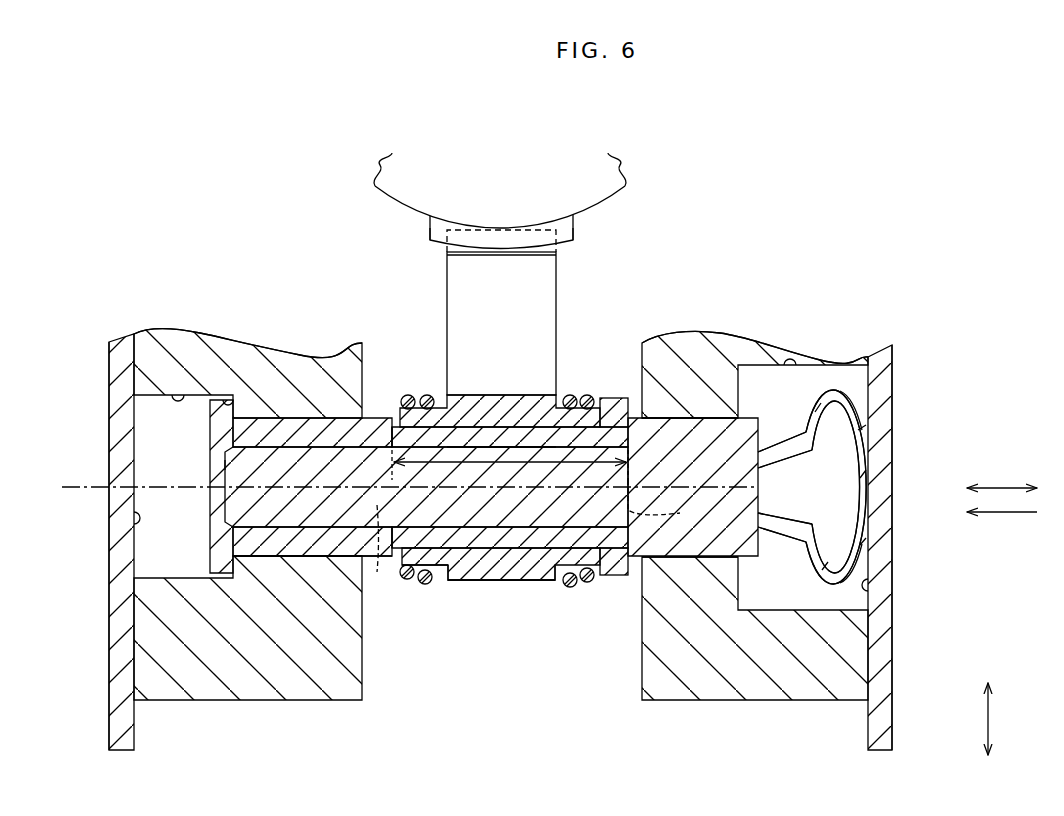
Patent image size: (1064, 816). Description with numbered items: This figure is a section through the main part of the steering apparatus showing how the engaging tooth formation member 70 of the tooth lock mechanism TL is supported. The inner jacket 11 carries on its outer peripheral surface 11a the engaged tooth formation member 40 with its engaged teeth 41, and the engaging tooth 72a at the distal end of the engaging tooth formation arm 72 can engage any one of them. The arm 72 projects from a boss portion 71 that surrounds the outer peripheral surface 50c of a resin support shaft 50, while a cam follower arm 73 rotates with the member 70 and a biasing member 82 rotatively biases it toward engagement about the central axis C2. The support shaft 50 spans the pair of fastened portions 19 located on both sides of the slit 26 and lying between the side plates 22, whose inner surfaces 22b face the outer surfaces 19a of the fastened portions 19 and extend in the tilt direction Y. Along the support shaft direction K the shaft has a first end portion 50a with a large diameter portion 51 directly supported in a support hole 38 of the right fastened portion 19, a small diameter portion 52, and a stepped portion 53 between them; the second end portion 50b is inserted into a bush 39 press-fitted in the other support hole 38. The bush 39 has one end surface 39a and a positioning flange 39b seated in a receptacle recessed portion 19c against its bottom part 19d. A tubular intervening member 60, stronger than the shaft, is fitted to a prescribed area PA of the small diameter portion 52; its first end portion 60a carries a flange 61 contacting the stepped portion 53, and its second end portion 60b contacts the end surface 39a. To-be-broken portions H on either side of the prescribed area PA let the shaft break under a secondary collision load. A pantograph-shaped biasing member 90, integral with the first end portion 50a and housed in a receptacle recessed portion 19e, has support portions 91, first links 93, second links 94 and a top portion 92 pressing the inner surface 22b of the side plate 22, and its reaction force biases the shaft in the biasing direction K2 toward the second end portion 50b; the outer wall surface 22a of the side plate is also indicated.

The inner jacket 11 is at (615, 199).
The outer peripheral surface 11a is at (391, 198).
The fastened portion 19 is at (200, 703).
The outer surface 19a is at (132, 360).
The receptacle recessed portion 19c is at (176, 393).
The bottom part 19d is at (227, 397).
The receptacle recessed portion 19e is at (790, 362).
The side plate 22 is at (107, 608).
The side wall outer surface 22a is at (108, 653).
The inner surface 22b is at (127, 521).
The slit 26 is at (392, 688).
The support hole 38 is at (293, 558).
The bush 39 is at (300, 415).
The one end surface 39a is at (410, 394).
The positioning flange 39b is at (216, 557).
The engaged tooth formation member 40 is at (433, 240).
The engaged teeth 41 is at (560, 242).
The support shaft 50 is at (352, 445).
The first end portion 50a is at (685, 425).
The second end portion 50b is at (231, 465).
The outer peripheral surface 50c is at (522, 445).
The large diameter portion 51 is at (678, 560).
The small diameter portion 52 is at (508, 584).
The stepped portion 53 is at (605, 583).
The intervening member 60 is at (460, 550).
The first end portion 60a is at (616, 408).
The second end portion 60b is at (398, 550).
The flange 61 is at (616, 572).
The engaging tooth formation member 70 is at (539, 584).
The boss portion 71 is at (442, 567).
The engaging tooth formation arm 72 is at (557, 337).
The engaging tooth 72a is at (490, 228).
The cam follower arm 73 is at (483, 572).
The biasing member 82 is at (409, 581).
The biasing member 90 is at (838, 588).
The support portions 91 is at (768, 446).
The top portion 92 is at (866, 477).
The first links 93 is at (813, 423).
The second links 94 is at (859, 418).
The central axis C2 is at (80, 484).
The to-be-broken portions H is at (532, 538).
The prescribed area PA is at (475, 460).
The tooth lock mechanism TL is at (598, 242).
The support shaft direction K is at (1003, 487).
The biasing direction K2 is at (1003, 514).
The tilt direction Y is at (990, 716).